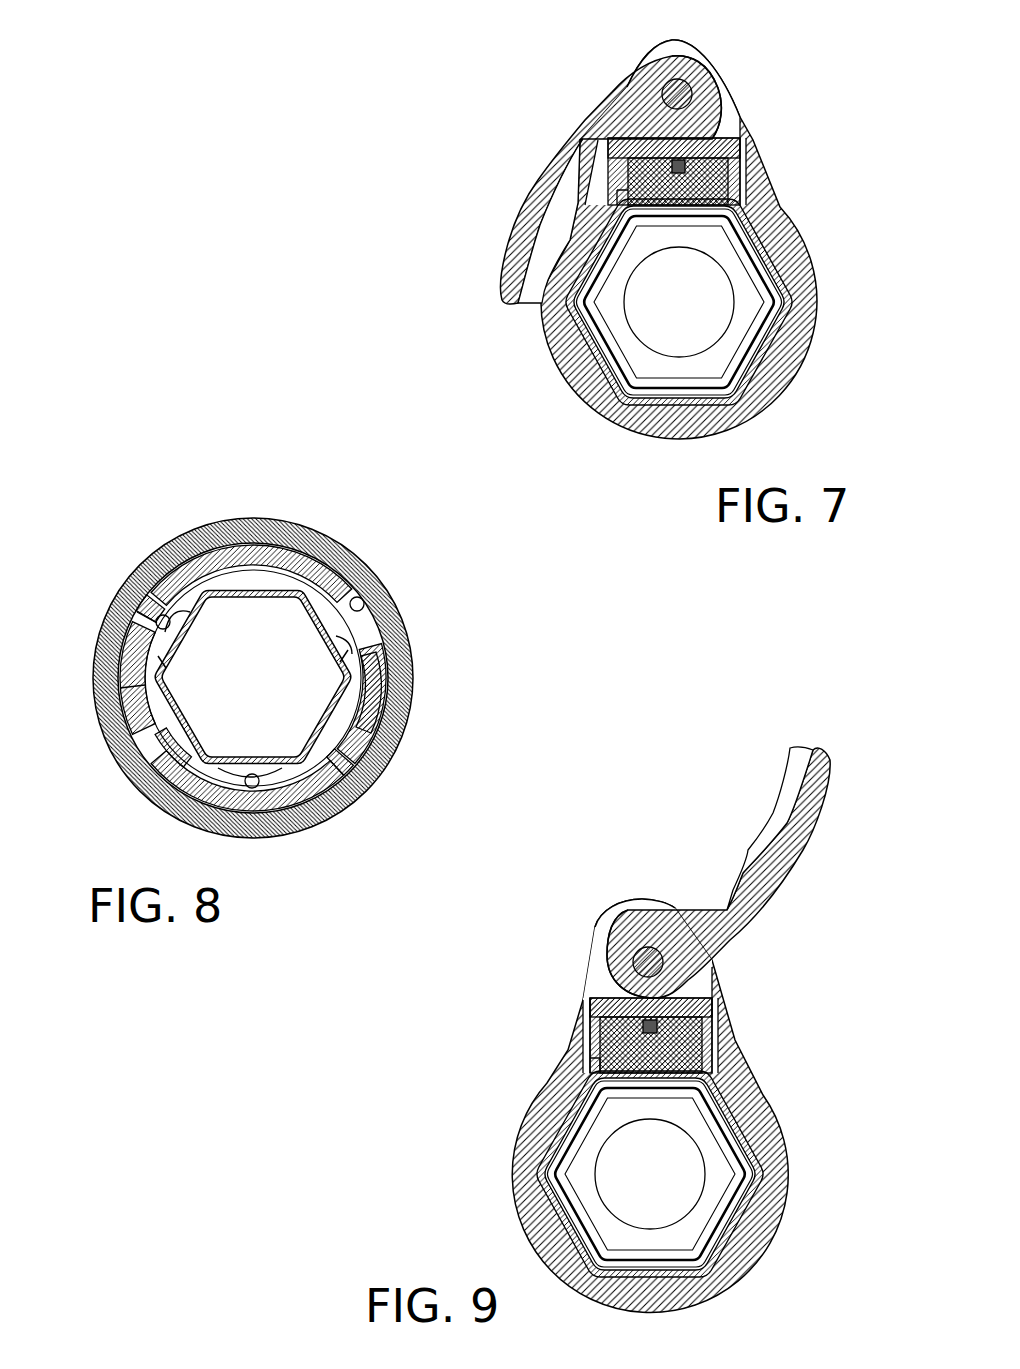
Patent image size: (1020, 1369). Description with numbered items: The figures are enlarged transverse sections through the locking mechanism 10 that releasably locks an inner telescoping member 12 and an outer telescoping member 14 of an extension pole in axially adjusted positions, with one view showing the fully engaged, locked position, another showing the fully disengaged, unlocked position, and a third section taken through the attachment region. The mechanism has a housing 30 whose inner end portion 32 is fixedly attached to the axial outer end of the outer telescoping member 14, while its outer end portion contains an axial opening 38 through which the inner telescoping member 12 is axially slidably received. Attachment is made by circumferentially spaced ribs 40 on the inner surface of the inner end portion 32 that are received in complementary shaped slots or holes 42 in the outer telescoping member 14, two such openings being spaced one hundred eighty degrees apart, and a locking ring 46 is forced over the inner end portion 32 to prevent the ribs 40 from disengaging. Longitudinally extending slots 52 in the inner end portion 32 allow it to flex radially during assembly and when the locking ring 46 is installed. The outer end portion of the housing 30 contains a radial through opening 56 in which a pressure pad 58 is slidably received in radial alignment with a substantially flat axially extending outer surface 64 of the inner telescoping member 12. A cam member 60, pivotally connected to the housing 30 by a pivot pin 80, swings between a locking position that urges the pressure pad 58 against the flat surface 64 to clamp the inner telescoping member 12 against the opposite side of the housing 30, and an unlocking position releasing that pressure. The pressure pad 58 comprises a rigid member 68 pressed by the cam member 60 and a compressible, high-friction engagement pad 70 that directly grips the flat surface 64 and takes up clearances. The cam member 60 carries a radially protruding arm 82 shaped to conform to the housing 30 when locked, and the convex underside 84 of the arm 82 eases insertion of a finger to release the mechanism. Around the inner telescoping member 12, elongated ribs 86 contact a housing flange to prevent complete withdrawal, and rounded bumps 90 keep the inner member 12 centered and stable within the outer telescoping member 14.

In FIG. 7, the locking mechanism 10 is at (655, 219).
In FIG. 9, the locking mechanism 10 is at (663, 1022).
In FIG. 7, the inner telescoping member 12 is at (594, 346).
In FIG. 8, the inner telescoping member 12 is at (245, 590).
In FIG. 9, the inner telescoping member 12 is at (562, 1130).
In FIG. 8, the outer telescoping member 14 is at (345, 623).
In FIG. 7, the housing 30 is at (826, 312).
In FIG. 9, the housing 30 is at (790, 1158).
In FIG. 8, the inner end portion 32 is at (283, 555).
In FIG. 7, the axial opening 38 is at (755, 226).
In FIG. 9, the axial opening 38 is at (725, 1098).
In FIG. 8, the ribs 40 is at (152, 742).
In FIG. 8, the slots or holes 42 is at (145, 660).
In FIG. 8, the locking ring 46 is at (332, 547).
In FIG. 8, the slots 52 is at (152, 595).
In FIG. 9, the radial through opening 56 is at (590, 1040).
In FIG. 7, the pressure pad 58 is at (669, 142).
In FIG. 9, the pressure pad 58 is at (623, 1014).
In FIG. 7, the cam member 60 is at (704, 78).
In FIG. 9, the cam member 60 is at (628, 917).
In FIG. 7, the substantially flat axially extending outer surface 64 is at (706, 203).
In FIG. 9, the substantially flat axially extending outer surface 64 is at (690, 1070).
In FIG. 7, the rigid member 68 is at (628, 149).
In FIG. 9, the rigid member 68 is at (605, 1002).
In FIG. 7, the compressible engagement pad 70 is at (630, 194).
In FIG. 9, the compressible engagement pad 70 is at (605, 1058).
In FIG. 7, the pivot pin 80 is at (672, 85).
In FIG. 9, the pivot pin 80 is at (650, 958).
In FIG. 7, the arm 82 is at (609, 152).
In FIG. 9, the arm 82 is at (730, 865).
In FIG. 7, the underside 84 is at (536, 268).
In FIG. 9, the underside 84 is at (788, 802).
In FIG. 8, the ribs 86 is at (178, 618).
In FIG. 8, the rounded bumps 90 is at (162, 625).